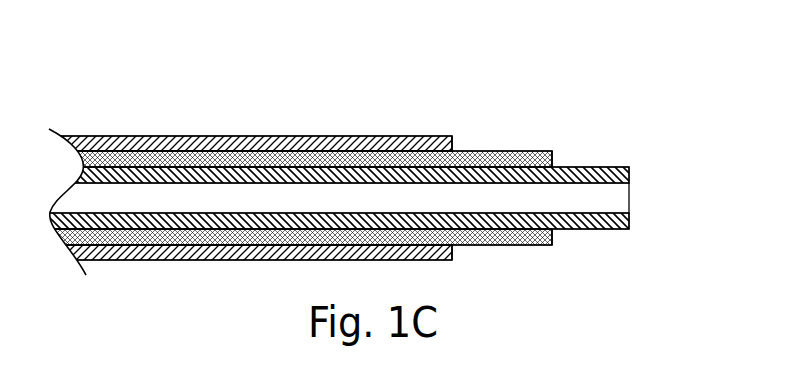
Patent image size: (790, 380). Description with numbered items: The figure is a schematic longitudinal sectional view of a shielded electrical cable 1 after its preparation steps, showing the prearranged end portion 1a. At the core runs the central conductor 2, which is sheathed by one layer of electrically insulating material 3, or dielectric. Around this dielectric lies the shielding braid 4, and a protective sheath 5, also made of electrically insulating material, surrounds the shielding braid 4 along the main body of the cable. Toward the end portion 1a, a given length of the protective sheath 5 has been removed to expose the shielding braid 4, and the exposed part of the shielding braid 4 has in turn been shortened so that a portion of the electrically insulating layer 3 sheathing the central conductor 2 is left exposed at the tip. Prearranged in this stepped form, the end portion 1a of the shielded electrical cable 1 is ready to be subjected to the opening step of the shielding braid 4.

The shielded electrical cable 1 is at (369, 172).
The end portion 1a is at (515, 142).
The central conductor 2 is at (622, 195).
The layer of electrically insulating material 3 is at (625, 218).
The shielding braid 4 is at (530, 245).
The protective sheath 5 is at (366, 136).